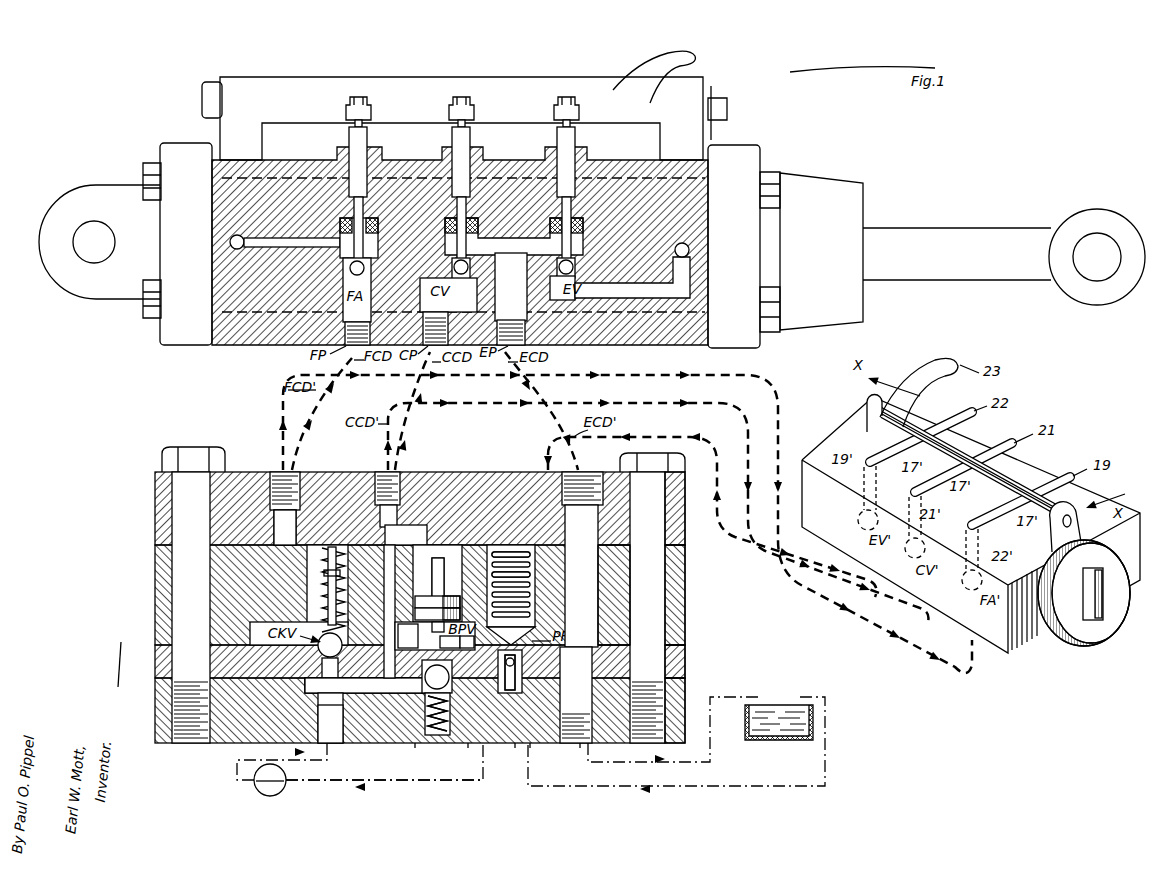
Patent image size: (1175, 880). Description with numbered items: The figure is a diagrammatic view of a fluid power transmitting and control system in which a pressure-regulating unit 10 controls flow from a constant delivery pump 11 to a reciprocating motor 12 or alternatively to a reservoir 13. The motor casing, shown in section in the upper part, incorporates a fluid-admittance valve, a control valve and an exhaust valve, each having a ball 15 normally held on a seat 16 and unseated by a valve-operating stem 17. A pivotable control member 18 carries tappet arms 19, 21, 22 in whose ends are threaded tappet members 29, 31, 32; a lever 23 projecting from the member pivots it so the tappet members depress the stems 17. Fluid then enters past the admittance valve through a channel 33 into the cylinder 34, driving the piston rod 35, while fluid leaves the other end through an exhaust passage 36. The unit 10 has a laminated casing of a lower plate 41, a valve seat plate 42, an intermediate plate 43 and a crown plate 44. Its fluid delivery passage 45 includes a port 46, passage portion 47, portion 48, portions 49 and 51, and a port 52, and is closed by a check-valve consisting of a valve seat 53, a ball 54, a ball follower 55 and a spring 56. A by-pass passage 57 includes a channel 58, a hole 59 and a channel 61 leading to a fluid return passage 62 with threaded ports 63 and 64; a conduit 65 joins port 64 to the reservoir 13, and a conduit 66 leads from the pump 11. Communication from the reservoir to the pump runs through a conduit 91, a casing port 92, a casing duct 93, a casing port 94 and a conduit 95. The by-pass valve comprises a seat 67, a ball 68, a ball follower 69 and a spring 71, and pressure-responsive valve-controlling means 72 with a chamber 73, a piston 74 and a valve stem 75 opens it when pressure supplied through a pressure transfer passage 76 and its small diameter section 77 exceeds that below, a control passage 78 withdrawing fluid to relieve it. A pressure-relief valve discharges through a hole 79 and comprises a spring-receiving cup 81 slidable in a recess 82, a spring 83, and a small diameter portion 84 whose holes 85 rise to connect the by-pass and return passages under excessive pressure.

The pressure-regulating unit 10 is at (236, 466).
The pump 11 is at (286, 777).
The motor 12 is at (186, 135).
The reservoir 13 is at (784, 702).
The ball 15 is at (350, 266).
The seat 16 is at (560, 265).
The valve-operating stems 17 is at (356, 262).
The pivotable control member 18 is at (318, 79).
The tappet arm 19 is at (372, 113).
The tappet arm 21 is at (476, 113).
The tappet arm 22 is at (582, 113).
The lever 23 is at (680, 55).
The threaded tappet member 29 is at (358, 96).
The threaded tappet member 31 is at (461, 96).
The threaded tappet member 32 is at (567, 96).
The channel 33 is at (230, 243).
The cylinder 34 is at (297, 165).
The piston rod 35 is at (957, 242).
The exhaust passage 36 is at (620, 271).
The lower plate 41 is at (678, 706).
The valve seat plate 42 is at (678, 669).
The intermediate plate 43 is at (678, 622).
The crown plate 44 is at (678, 549).
The fluid delivery passage 45 is at (278, 515).
The port 46 is at (342, 743).
The fluid delivery passage portion 47 is at (324, 708).
The fluid delivery passage portion 48 is at (367, 685).
The fluid delivery passage portion 49 is at (308, 590).
The fluid delivery passage portion 51 is at (275, 539).
The port 52 is at (297, 480).
The valve seat 53 is at (367, 685).
The ball 54 is at (312, 634).
The ball follower 55 is at (322, 573).
The spring 56 is at (322, 558).
The by-pass passage 57 is at (415, 745).
The channel 58 is at (367, 685).
The hole 59 is at (436, 645).
The channel 61 is at (475, 642).
The fluid return passage 62 is at (605, 608).
The threaded port 63 is at (572, 478).
The threaded port 64 is at (580, 745).
The conduit 65 is at (728, 697).
The conduit 66 is at (237, 771).
The seat 67 is at (459, 642).
The ball 68 is at (437, 677).
The ball follower 69 is at (446, 698).
The spring 71 is at (459, 704).
The pressure-responsive valve-controlling means 72 is at (446, 590).
The chamber 73 is at (419, 559).
The piston 74 is at (437, 602).
The valve stem 75 is at (437, 614).
The pressure transfer passage 76 is at (396, 580).
The small diameter section 77 is at (408, 636).
The control passage 78 is at (384, 517).
The hole 79 is at (522, 661).
The spring-receiving cup 81 is at (530, 600).
The recess 82 is at (540, 576).
The spring 83 is at (540, 558).
The small diameter portion 84 is at (576, 695).
The holes 85 is at (522, 670).
The conduit 91 is at (742, 786).
The casing port 92 is at (530, 745).
The casing duct 93 is at (515, 745).
The casing port 94 is at (468, 745).
The conduit 95 is at (405, 782).